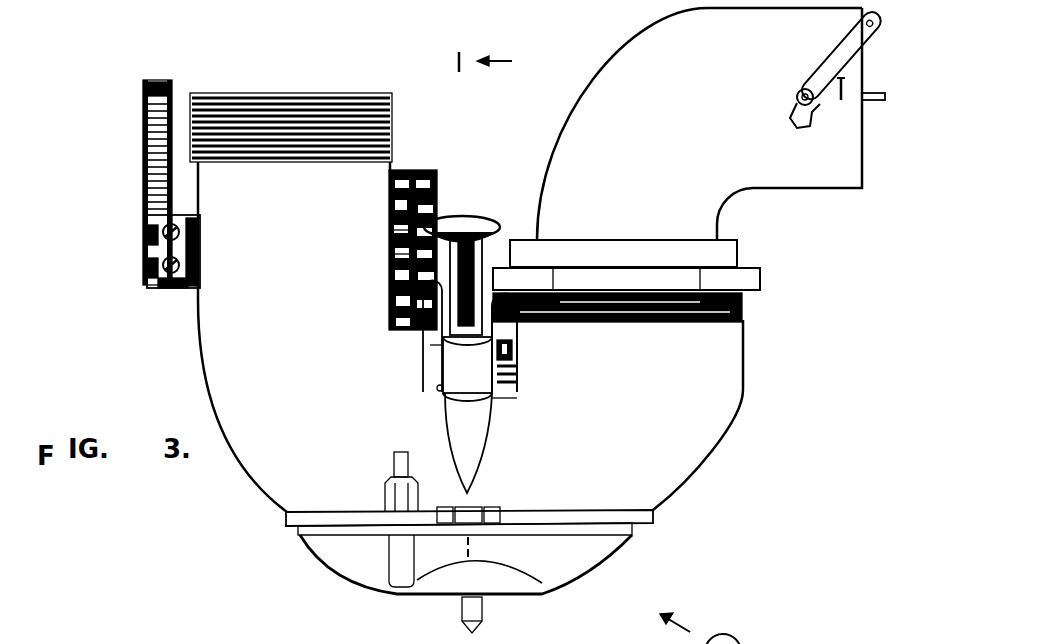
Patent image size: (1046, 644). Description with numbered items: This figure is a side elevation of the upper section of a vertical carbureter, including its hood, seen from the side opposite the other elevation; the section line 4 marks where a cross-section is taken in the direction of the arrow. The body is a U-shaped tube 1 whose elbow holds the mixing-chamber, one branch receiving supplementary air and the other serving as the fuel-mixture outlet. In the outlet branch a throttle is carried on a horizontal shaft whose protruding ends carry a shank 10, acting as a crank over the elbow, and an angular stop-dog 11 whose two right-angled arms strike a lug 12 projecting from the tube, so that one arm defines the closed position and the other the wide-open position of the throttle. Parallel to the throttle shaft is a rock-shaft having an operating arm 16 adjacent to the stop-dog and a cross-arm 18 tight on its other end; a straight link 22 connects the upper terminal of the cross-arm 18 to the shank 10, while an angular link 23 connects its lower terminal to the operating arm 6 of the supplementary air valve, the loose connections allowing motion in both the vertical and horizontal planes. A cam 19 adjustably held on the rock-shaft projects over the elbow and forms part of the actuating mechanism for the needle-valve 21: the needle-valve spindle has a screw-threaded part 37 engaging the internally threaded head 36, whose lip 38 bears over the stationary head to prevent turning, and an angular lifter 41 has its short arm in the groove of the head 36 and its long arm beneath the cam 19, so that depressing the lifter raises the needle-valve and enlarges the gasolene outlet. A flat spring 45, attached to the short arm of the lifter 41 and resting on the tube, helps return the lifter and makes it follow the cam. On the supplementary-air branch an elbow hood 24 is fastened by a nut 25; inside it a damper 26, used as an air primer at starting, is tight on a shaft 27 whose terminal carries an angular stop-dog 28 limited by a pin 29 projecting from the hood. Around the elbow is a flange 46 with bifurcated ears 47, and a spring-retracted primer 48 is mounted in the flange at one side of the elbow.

The U-shaped tube 1 is at (466, 363).
The section line 4- 4 is at (596, 332).
The operating arm 6 is at (520, 350).
The shank 10 is at (392, 241).
The angular stop-dog 11 is at (148, 258).
The lug 12 is at (176, 290).
The operating arm 16 is at (153, 167).
The cross-arm 18 is at (434, 393).
The cam 19 is at (392, 278).
The needle-valve 21 is at (481, 266).
The straight link 22 is at (438, 183).
The angular link 23 is at (518, 323).
The elbow hood 24 is at (699, 124).
The nut 25 is at (735, 257).
The damper 26 is at (874, 101).
The shaft 27 is at (797, 93).
The angular stop-dog 28 is at (832, 63).
The pin 29 is at (841, 100).
The head 36 is at (467, 369).
The screw-threaded part 37 is at (440, 386).
The lip 38 is at (477, 394).
The angular lifter 41 is at (433, 332).
The flat spring 45 is at (520, 388).
The flange 46 is at (590, 518).
The bifurcated ears 47 is at (447, 508).
The spring-retracted primer 48 is at (394, 465).